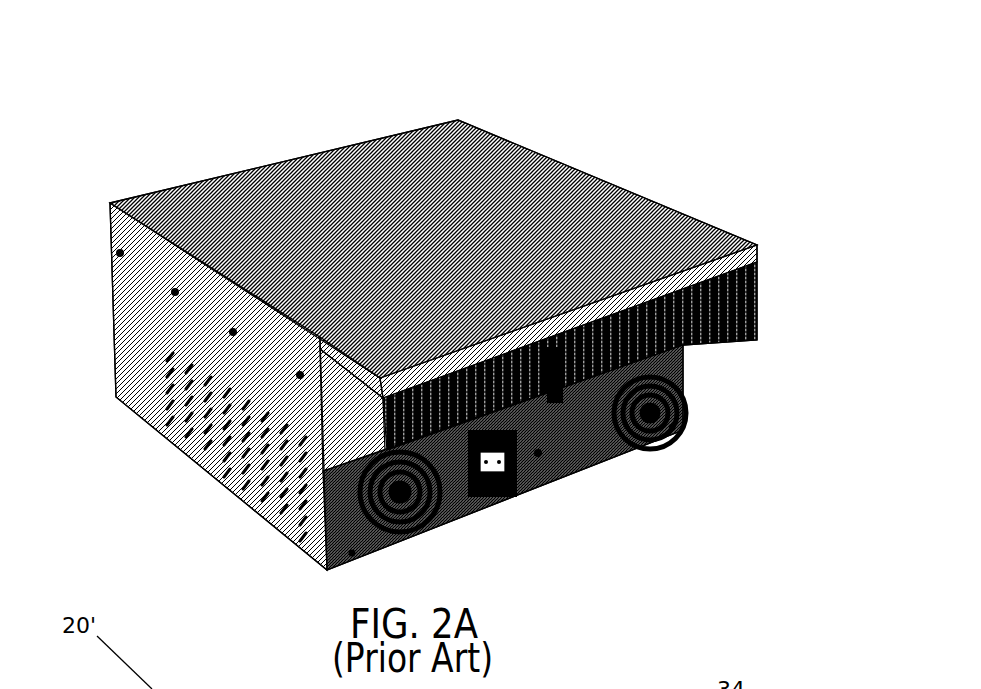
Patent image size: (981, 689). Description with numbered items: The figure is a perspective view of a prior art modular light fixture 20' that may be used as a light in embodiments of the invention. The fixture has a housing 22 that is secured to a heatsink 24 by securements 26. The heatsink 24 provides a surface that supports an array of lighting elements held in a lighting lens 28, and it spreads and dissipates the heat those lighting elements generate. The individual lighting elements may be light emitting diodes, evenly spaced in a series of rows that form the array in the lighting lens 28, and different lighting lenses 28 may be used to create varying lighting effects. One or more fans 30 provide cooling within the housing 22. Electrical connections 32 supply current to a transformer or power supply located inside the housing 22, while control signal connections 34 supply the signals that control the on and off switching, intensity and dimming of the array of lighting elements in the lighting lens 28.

The modular light fixture 20' is at (412, 292).
The housing 22 is at (227, 357).
The heatsink 24 is at (673, 338).
The securements 26 is at (117, 247).
The lighting lens 28 is at (572, 242).
The fans 30 is at (447, 515).
The electrical connections 32 is at (517, 477).
The control signal connections 34 is at (546, 456).